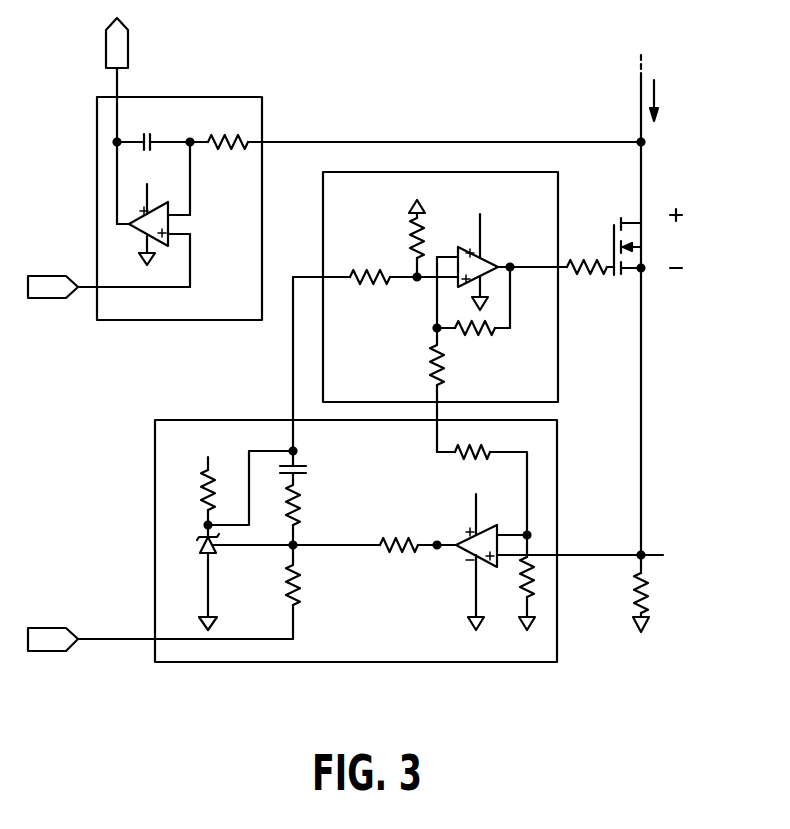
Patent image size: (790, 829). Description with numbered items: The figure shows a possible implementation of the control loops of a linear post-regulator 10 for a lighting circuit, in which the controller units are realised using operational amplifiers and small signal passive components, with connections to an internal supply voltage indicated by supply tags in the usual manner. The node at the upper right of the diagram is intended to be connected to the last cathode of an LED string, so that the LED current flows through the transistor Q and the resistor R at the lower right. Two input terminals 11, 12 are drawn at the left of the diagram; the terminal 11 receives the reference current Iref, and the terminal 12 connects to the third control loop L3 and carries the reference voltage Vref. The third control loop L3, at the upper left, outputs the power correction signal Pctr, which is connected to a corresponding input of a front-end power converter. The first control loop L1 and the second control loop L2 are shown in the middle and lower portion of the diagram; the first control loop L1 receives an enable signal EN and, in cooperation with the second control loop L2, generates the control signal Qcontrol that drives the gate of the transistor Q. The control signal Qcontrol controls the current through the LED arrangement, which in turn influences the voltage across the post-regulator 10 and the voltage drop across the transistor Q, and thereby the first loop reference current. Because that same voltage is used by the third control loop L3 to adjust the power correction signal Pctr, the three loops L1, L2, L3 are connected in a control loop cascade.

The LED driver circuit 10 is at (483, 97).
The reference current input terminal 11 is at (48, 653).
The control input terminal 12 is at (52, 300).
The first control loop L1 is at (558, 345).
The second control loop L2 is at (155, 482).
The third control loop L3 is at (262, 97).
The transistor Q is at (648, 255).
The sense resistor R is at (648, 572).
The power correction signal Pctr is at (130, 51).
The reference voltage Vref is at (155, 289).
The reference current Iref is at (100, 636).
The enable signal EN is at (529, 265).
The control signal Qcontrol is at (615, 276).